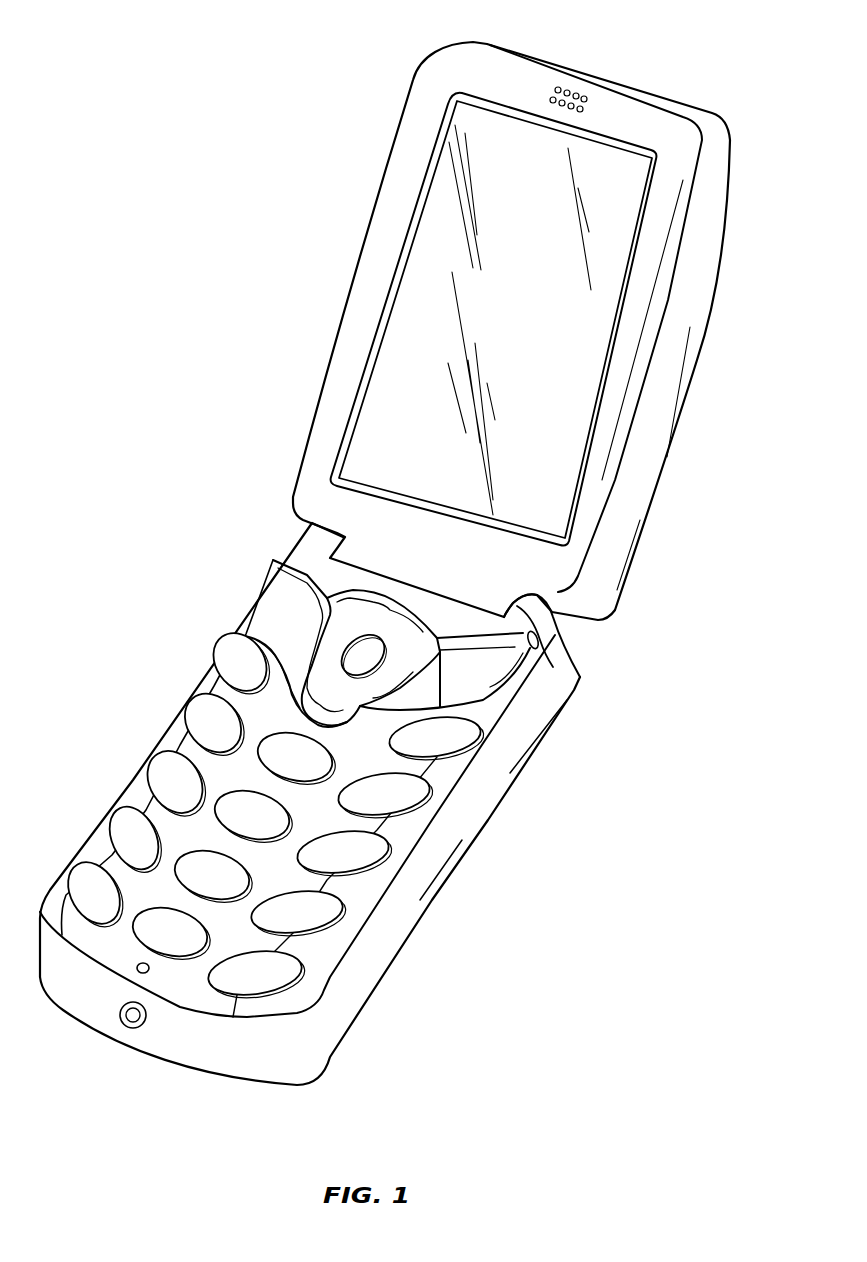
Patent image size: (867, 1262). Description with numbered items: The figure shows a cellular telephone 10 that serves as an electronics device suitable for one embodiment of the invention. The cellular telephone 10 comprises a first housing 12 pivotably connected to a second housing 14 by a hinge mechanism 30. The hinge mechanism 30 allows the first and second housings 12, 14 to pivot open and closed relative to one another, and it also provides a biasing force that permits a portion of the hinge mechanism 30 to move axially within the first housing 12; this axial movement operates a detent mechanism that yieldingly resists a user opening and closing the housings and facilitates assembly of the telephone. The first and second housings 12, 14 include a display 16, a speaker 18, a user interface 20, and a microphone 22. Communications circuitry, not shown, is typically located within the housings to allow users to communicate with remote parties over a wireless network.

The cellular telephone 10 is at (160, 174).
The first housing 12 is at (408, 95).
The second housing 14 is at (160, 736).
The display 16 is at (580, 311).
The speaker 18 is at (574, 92).
The user interface 20 is at (341, 885).
The microphone 22 is at (137, 970).
The hinge mechanism 30 is at (553, 589).